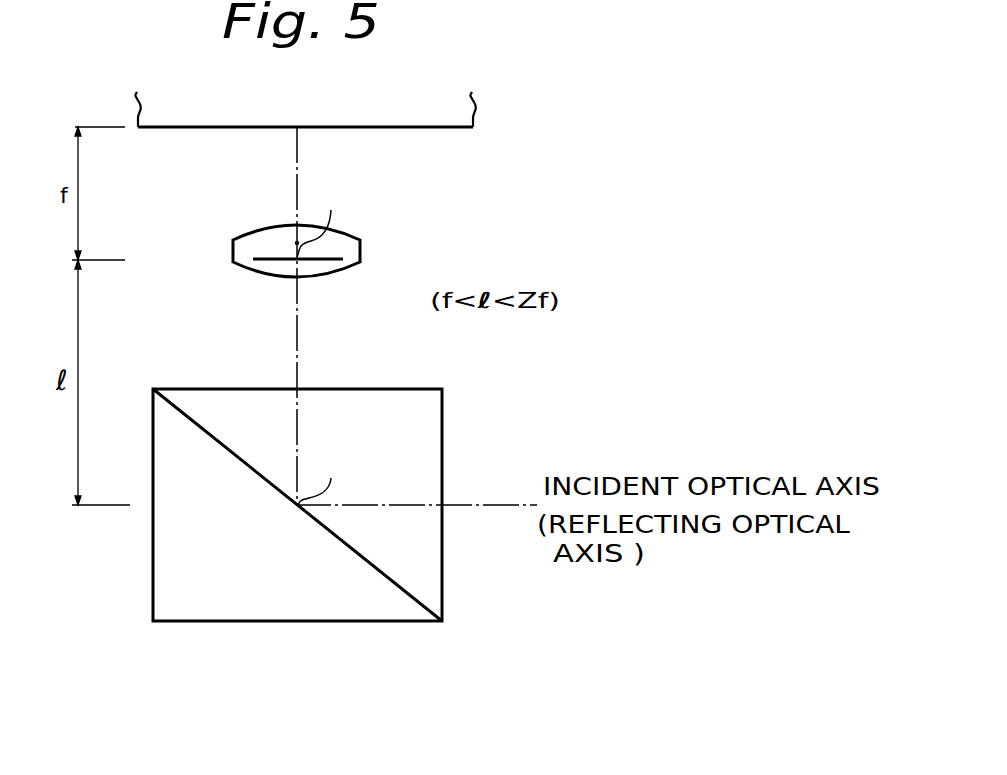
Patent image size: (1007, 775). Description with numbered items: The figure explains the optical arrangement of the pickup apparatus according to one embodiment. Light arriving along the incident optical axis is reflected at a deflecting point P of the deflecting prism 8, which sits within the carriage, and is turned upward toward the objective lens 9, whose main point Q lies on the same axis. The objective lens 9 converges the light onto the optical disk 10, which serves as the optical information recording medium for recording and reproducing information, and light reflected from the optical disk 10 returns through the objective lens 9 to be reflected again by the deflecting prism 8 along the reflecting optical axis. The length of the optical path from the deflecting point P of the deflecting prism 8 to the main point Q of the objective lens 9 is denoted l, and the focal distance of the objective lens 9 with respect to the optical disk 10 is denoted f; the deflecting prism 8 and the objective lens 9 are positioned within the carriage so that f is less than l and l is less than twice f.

The optical disk 10 is at (476, 112).
The objective lens 9 is at (362, 246).
The deflecting prism 8 is at (277, 611).